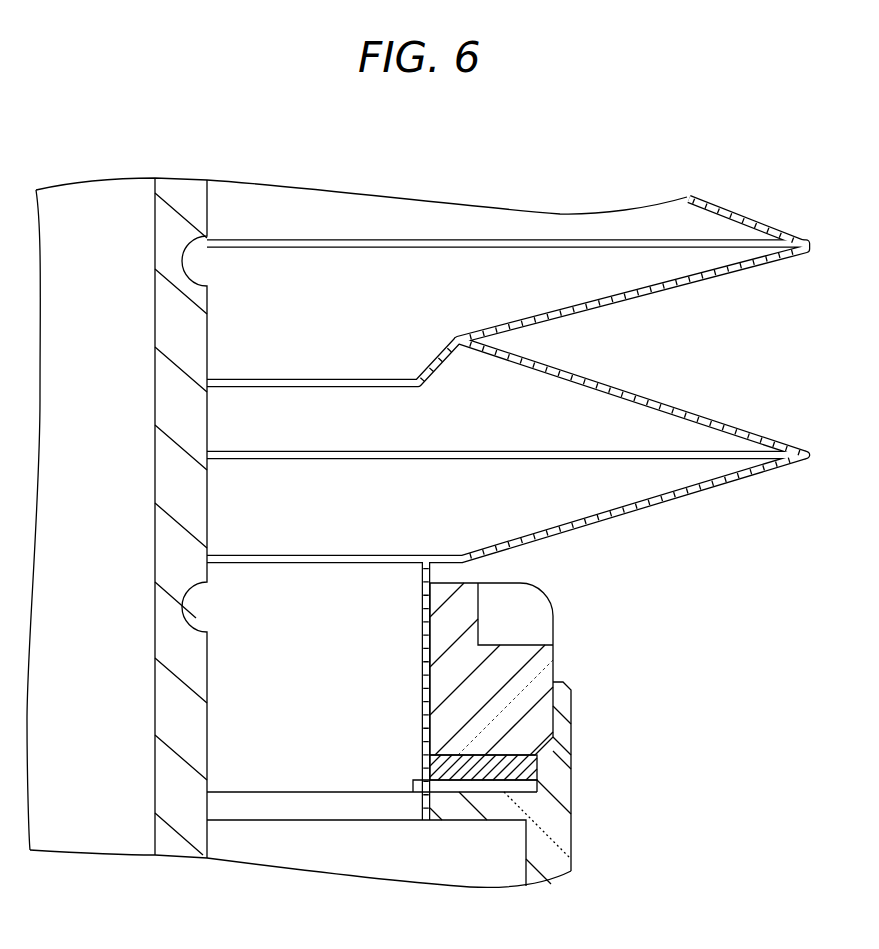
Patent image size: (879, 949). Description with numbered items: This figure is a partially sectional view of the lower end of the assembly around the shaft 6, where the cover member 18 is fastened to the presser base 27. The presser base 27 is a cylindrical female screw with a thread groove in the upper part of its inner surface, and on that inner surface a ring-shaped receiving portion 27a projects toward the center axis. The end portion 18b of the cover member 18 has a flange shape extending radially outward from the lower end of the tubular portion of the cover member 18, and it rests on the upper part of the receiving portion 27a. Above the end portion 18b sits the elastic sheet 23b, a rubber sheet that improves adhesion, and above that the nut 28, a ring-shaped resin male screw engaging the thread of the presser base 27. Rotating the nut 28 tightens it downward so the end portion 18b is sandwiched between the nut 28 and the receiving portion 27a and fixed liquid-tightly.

The shaft 6 is at (184, 205).
The cover member 18 is at (588, 522).
The end portion 18b is at (520, 786).
The elastic sheet 23b is at (541, 766).
The presser base 27 is at (560, 826).
The receiving portion 27a is at (460, 812).
The nut 28 is at (540, 665).